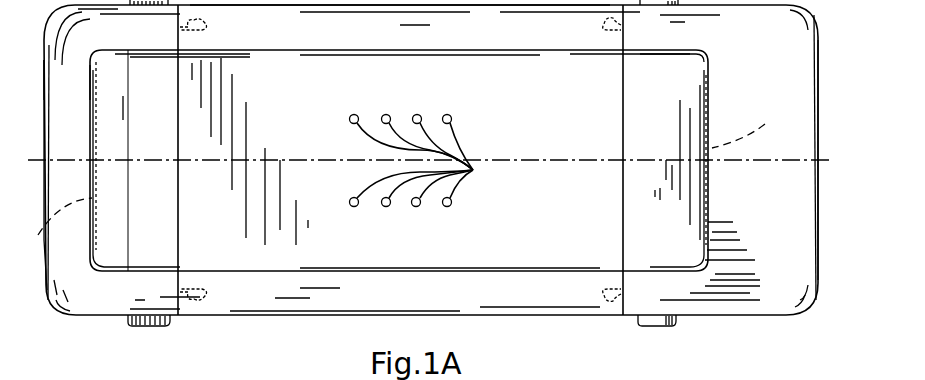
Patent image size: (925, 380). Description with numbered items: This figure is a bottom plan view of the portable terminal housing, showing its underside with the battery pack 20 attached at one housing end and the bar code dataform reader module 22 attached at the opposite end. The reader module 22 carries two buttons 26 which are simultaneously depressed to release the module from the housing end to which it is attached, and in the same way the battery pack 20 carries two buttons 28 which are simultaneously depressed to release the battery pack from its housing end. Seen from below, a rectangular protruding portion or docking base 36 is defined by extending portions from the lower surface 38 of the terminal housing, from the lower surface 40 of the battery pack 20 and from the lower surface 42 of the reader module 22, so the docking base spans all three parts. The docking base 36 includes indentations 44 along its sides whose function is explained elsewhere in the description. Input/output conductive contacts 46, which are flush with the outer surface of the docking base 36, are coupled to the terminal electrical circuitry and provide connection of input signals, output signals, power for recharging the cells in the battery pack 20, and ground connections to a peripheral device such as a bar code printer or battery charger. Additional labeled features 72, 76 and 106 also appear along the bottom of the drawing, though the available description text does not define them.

The battery pack 20 is at (790, 318).
The reader module 22 is at (48, 290).
The buttons 26 is at (138, 327).
The buttons 28 is at (662, 327).
The docking base 36 is at (148, 217).
The lower surface 38 is at (502, 41).
The lower surface 40 is at (751, 62).
The lower surface 42 is at (113, 40).
The indentations 44 is at (393, 175).
The conductive contacts 46 is at (424, 161).
The component 72 is at (547, 370).
The component 76 is at (699, 375).
The component 106 is at (610, 379).